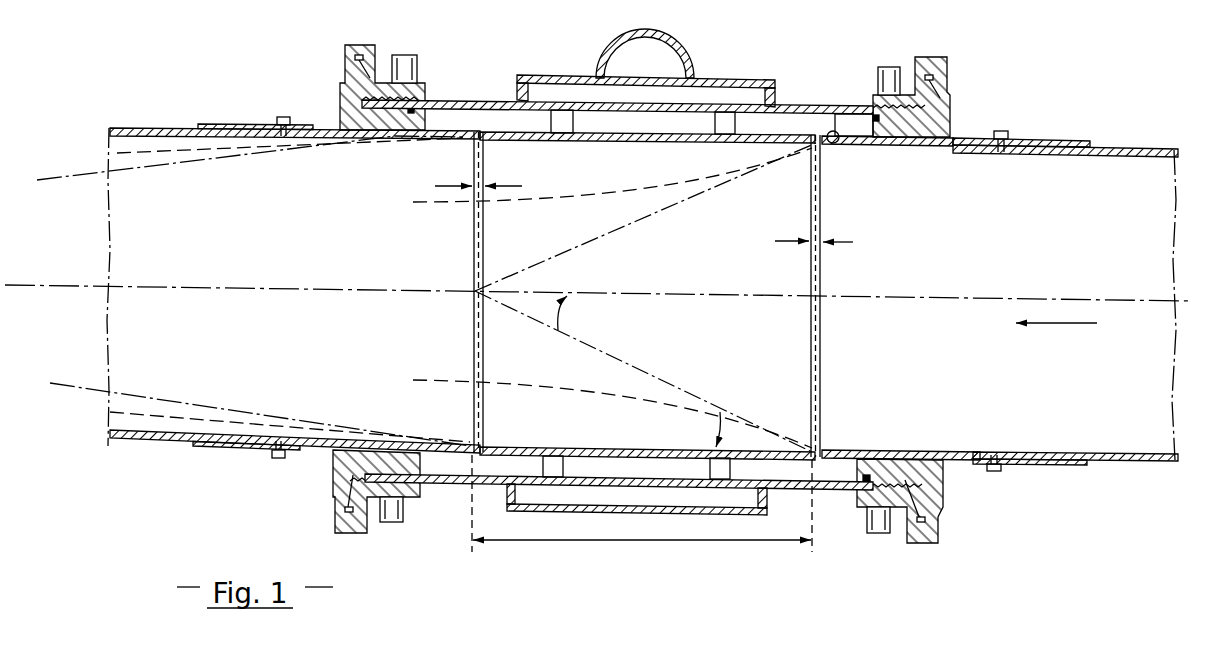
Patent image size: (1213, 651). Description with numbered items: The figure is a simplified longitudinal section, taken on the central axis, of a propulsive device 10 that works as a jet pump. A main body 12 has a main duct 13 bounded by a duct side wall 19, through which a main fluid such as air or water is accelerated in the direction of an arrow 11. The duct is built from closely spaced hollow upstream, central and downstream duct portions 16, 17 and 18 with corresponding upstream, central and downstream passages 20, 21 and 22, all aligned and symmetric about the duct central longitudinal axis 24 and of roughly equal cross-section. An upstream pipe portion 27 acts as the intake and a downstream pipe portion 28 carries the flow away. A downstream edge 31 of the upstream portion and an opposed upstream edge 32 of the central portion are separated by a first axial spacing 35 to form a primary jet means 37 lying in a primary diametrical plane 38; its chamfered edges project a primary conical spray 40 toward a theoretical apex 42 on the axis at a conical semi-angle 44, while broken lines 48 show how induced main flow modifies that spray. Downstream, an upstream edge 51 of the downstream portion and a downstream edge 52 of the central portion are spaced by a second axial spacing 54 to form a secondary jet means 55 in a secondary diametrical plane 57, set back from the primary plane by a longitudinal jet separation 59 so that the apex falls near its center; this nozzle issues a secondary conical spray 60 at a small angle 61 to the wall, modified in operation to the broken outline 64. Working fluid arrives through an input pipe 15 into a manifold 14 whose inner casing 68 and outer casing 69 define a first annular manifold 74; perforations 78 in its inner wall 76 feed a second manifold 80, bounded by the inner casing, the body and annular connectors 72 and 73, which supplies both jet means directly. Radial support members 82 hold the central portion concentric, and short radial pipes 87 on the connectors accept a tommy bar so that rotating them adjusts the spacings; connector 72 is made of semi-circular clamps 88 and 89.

The propulsive device 10 is at (993, 52).
The arrow 11 is at (1058, 327).
The main body 12 is at (1060, 112).
The main duct 13 is at (1027, 430).
The manifold 14 is at (791, 92).
The input pipe 15 is at (670, 45).
The upstream duct portion 16 is at (958, 152).
The central duct portion 17 is at (617, 145).
The downstream duct portion 18 is at (325, 140).
The duct side wall 19 is at (907, 164).
The upstream passage 20 is at (1013, 226).
The central passage 21 is at (650, 281).
The downstream passage 22 is at (259, 276).
The duct central longitudinal axis 24 is at (987, 298).
The upstream pipe portion 27 is at (1153, 160).
The downstream pipe portion 28 is at (107, 140).
The downstream edge 31 is at (836, 144).
The upstream edge 32 is at (812, 194).
The first axial spacing 35 is at (852, 242).
The primary jet means 37 is at (812, 147).
The primary diametrical plane 38 is at (818, 318).
The primary conical spray 40 is at (672, 208).
The theoretical apex 42 is at (484, 330).
The conical semi-angle 44 is at (574, 305).
The broken lines 48 is at (527, 205).
The upstream edge 51 is at (469, 140).
The downstream edge 52 is at (487, 140).
The second axial spacing 54 is at (505, 184).
The secondary jet means 55 is at (459, 144).
The secondary diametrical plane 57 is at (472, 246).
The longitudinal jet separation 59 is at (575, 548).
The secondary conical spray 60 is at (187, 166).
The angle 61 is at (378, 430).
The broken outline 64 is at (97, 156).
The inner casing 68 is at (430, 100).
The outer casing 69 is at (527, 83).
The annular connector 72 is at (980, 104).
The annular connector 73 is at (342, 63).
The first annular manifold 74 is at (755, 92).
The inner wall 76 is at (659, 137).
The perforations 78 is at (655, 110).
The second manifold 80 is at (840, 116).
The radial support members 82 is at (562, 110).
The short radial pipes 87 is at (402, 56).
The semi-circular clamp 88 is at (948, 78).
The semi-circular clamp 89 is at (925, 540).